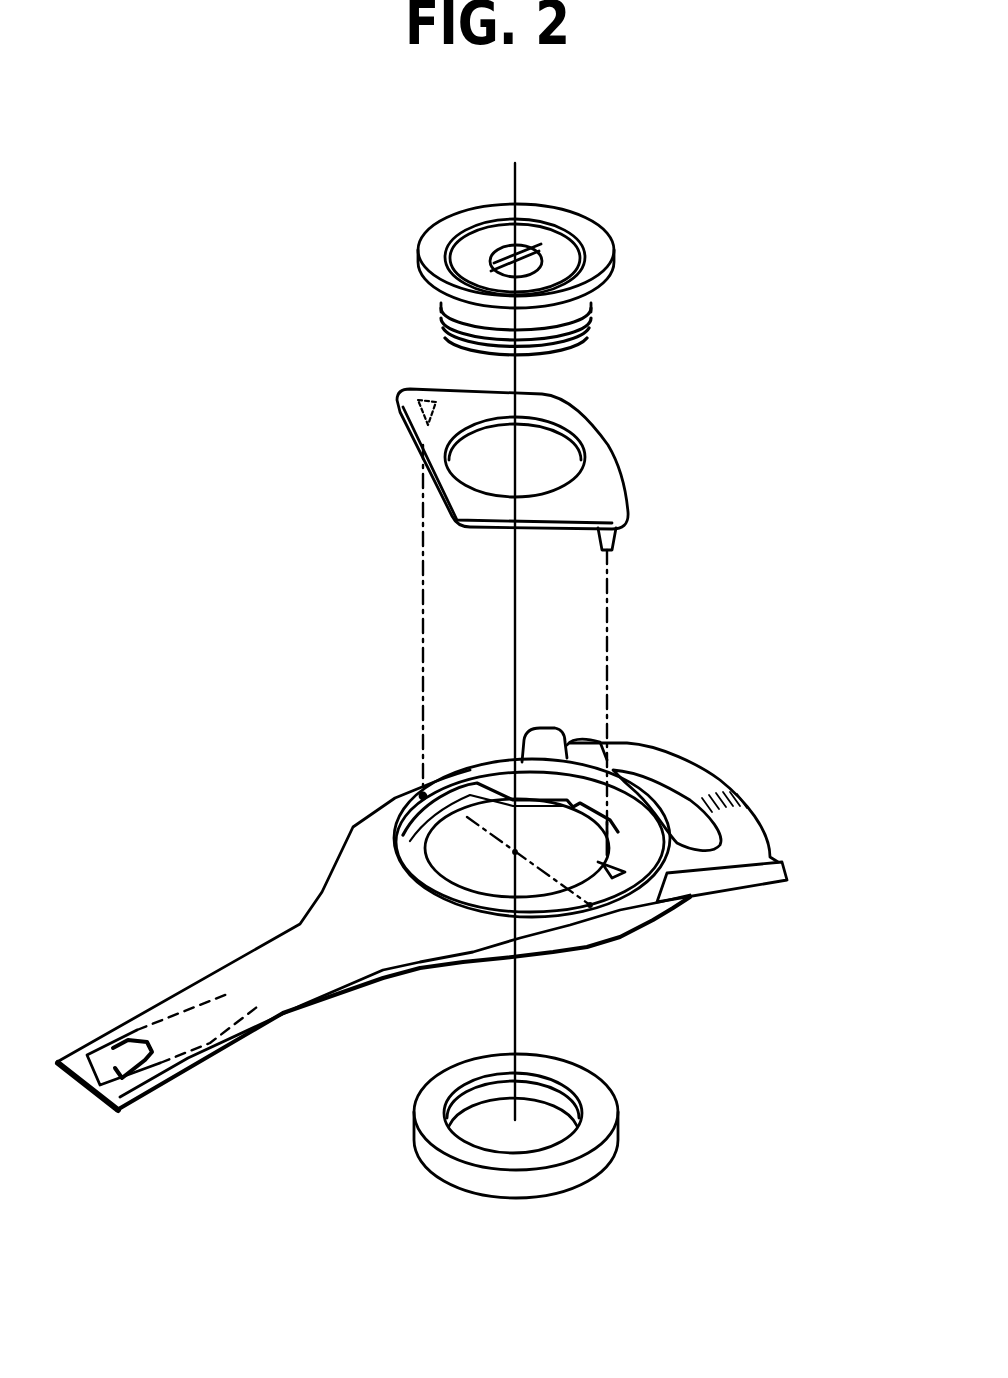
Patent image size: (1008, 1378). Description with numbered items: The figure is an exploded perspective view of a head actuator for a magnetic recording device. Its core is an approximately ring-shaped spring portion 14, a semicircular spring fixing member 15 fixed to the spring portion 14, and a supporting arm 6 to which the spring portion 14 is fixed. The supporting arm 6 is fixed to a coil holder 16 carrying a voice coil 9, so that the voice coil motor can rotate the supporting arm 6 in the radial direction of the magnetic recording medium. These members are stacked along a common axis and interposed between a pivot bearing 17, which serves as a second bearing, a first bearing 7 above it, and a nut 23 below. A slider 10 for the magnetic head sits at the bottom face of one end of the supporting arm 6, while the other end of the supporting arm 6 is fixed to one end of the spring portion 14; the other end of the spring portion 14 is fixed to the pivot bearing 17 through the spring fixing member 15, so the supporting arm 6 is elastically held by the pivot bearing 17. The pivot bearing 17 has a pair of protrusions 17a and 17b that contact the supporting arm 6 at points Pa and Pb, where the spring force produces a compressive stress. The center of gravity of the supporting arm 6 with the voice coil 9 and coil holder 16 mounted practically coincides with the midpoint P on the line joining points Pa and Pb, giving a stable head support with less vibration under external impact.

The first bearing 7 is at (596, 258).
The pivot bearing 17 is at (602, 452).
The protrusion 17a is at (615, 545).
The protrusion 17b is at (418, 406).
The supporting arm 6 is at (273, 973).
The spring fixing member 15 is at (405, 840).
The spring portion 14 is at (455, 812).
The voice coil 9 is at (683, 777).
The coil holder 16 is at (720, 880).
The slider 10 is at (155, 1108).
The nut 23 is at (592, 1162).
The midpoint P is at (515, 852).
The contact point Pa is at (594, 900).
The contact point Pb is at (423, 795).